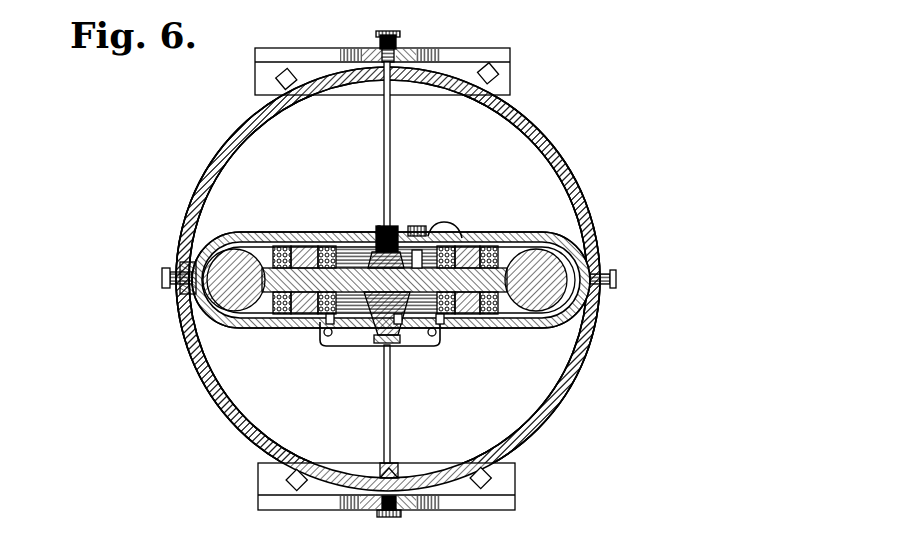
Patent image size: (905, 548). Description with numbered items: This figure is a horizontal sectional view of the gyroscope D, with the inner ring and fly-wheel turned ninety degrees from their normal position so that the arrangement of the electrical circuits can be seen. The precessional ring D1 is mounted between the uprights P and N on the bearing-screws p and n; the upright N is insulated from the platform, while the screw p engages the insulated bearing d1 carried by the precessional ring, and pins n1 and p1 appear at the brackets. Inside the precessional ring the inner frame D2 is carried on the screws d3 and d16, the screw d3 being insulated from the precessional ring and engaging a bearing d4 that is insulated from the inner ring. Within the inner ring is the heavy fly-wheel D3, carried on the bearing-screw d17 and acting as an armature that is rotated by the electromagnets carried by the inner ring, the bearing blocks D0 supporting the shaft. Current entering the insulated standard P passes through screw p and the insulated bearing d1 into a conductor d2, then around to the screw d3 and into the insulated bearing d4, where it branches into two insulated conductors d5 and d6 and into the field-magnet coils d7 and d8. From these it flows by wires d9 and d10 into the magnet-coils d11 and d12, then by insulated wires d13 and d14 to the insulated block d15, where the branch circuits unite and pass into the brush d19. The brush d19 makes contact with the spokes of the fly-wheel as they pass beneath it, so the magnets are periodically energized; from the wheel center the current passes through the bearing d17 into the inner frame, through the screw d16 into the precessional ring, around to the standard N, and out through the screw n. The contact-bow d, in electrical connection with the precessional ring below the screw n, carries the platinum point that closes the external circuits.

The gyroscope D is at (441, 133).
The precessional ring D1 is at (572, 190).
The inner frame D2 is at (586, 236).
The fly-wheel D3 is at (588, 300).
The bearing block D0 is at (305, 242).
The upright N is at (430, 48).
The bearing-screw n is at (388, 34).
The bracket pins n1 is at (280, 82).
The upright P is at (505, 495).
The bearing-screw p is at (398, 515).
The bracket pins p1 is at (285, 478).
The contact-bow d is at (390, 176).
The insulated bearing d1 is at (396, 465).
The conductor d2 is at (325, 452).
The screw d3 is at (166, 282).
The insulated bearing d4 is at (182, 270).
The insulated conductor d5 is at (272, 236).
The insulated conductor d6 is at (248, 310).
The field-magnet coil d7 is at (288, 240).
The field-magnet coil d8 is at (326, 324).
The wire d9 is at (366, 336).
The wire d10 is at (362, 236).
The magnet-coil d11 is at (520, 214).
The magnet-coil d12 is at (444, 326).
The insulated wire d13 is at (552, 326).
The insulated wire d14 is at (450, 240).
The insulated block d15 is at (416, 226).
The screw d16 is at (616, 278).
The bearing-screw d17 is at (380, 228).
The brush d19 is at (446, 222).